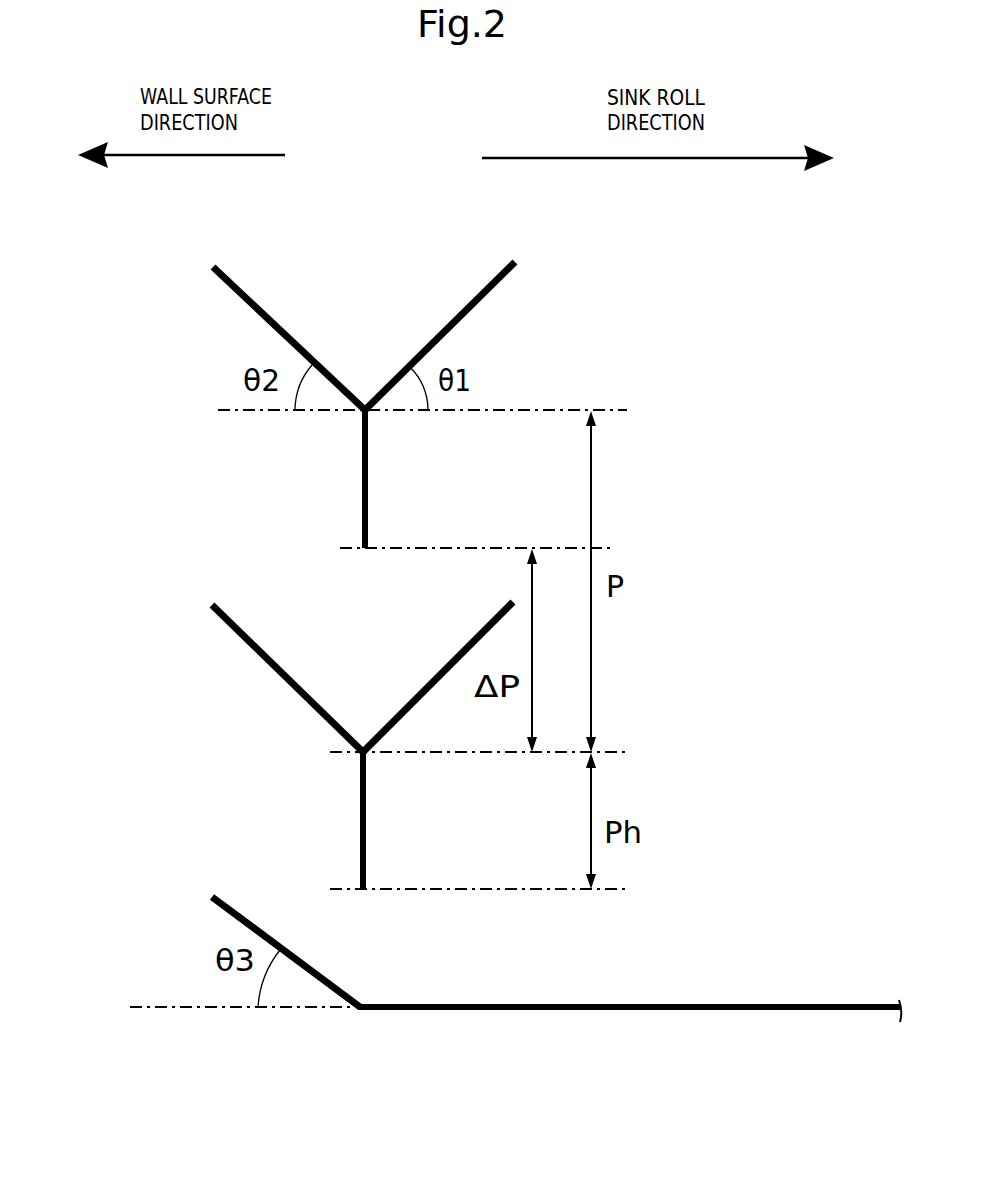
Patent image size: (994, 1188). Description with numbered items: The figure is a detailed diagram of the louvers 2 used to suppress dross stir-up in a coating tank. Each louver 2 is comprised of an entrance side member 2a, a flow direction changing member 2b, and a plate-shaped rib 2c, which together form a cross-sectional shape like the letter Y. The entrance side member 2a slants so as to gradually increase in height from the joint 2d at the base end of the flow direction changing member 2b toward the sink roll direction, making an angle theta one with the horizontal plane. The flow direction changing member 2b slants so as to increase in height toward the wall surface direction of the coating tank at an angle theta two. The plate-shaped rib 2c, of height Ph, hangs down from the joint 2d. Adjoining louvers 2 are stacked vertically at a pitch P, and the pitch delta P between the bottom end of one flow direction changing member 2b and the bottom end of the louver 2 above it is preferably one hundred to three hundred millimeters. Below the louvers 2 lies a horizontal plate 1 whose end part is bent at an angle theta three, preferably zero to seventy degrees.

The horizontal plate 1 is at (712, 1004).
The louver 2 is at (363, 607).
The entrance side member 2a is at (440, 333).
The flow direction changing member 2b is at (248, 296).
The plate-shaped rib 2c is at (368, 475).
The joint 2d is at (365, 404).